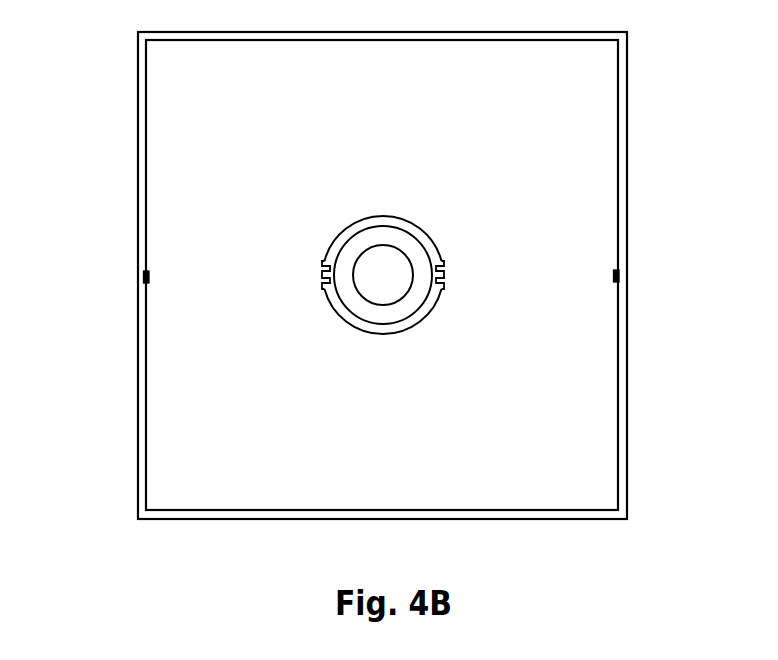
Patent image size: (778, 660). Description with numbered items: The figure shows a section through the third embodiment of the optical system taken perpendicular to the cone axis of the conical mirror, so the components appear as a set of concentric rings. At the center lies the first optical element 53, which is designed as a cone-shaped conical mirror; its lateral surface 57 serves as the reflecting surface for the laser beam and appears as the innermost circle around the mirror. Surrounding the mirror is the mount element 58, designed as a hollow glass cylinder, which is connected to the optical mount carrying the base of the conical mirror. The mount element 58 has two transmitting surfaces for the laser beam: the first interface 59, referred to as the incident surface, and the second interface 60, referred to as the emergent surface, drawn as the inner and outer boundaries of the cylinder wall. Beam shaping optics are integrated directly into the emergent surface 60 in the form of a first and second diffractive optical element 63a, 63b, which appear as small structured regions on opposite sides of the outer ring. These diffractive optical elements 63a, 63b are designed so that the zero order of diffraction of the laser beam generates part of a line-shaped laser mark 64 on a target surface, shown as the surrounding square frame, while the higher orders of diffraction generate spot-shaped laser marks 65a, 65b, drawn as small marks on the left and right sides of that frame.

The first optical element 53 is at (397, 286).
The lateral surface 57 is at (410, 252).
The mount element 58 is at (418, 315).
The first interface 59 is at (356, 320).
The second interface 60 is at (342, 229).
The first diffractive optical element 63a is at (440, 280).
The second diffractive optical element 63b is at (326, 284).
The line-shaped laser mark 64 is at (372, 510).
The spot-shaped laser mark 65a is at (624, 274).
The spot-shaped laser mark 65b is at (141, 277).